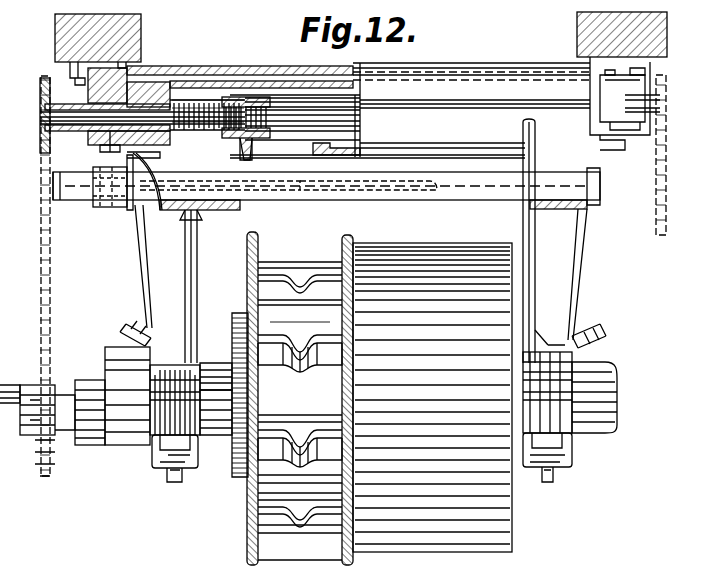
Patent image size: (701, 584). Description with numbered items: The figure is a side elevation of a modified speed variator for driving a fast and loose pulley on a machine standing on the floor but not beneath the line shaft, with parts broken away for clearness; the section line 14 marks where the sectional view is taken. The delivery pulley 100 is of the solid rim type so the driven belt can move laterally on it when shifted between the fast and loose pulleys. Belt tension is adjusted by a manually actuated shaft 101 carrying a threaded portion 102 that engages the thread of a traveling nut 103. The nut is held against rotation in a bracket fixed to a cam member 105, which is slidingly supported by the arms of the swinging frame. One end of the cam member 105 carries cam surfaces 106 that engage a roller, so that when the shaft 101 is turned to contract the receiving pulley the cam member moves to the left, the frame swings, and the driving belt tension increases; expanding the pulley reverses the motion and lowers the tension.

The delivery pulley 100 is at (379, 398).
The manually actuated shaft 101 is at (345, 112).
The threaded portion 102 is at (188, 110).
The traveling nut 103 is at (228, 97).
The cam member 105 is at (465, 188).
The cam surfaces 106 is at (75, 182).
The section line 14— 14 is at (245, 20).